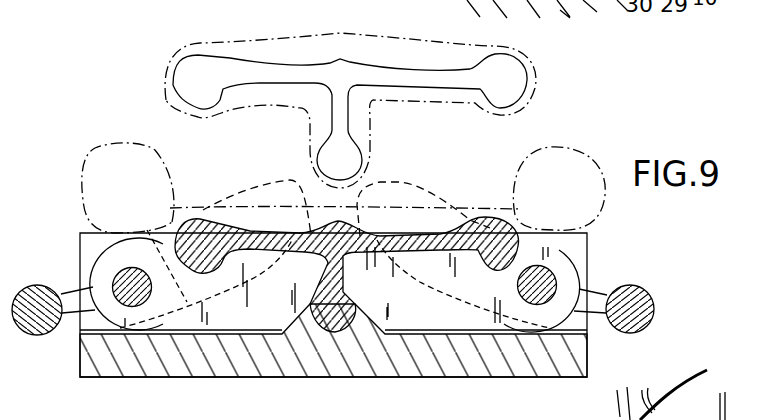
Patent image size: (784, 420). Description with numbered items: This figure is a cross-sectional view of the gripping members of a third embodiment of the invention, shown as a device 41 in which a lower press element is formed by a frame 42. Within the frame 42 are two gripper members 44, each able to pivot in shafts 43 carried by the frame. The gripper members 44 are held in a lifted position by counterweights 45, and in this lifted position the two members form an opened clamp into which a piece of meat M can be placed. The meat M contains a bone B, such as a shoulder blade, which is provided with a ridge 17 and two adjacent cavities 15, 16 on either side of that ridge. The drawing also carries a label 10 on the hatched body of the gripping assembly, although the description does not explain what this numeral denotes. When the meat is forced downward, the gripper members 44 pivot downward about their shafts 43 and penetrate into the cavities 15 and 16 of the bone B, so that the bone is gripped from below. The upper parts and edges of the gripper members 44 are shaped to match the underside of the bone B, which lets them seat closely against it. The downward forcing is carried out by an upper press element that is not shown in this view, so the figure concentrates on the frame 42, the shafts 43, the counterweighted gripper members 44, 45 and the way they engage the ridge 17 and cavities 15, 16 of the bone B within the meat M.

The piece of meat M is at (298, 39).
The bone B is at (510, 80).
The clamping body 10 is at (433, 232).
The cavity 15 is at (319, 116).
The cavity 16 is at (364, 108).
The ridge 17 is at (343, 149).
The device 41 is at (65, 268).
The frame 42 is at (572, 353).
The shafts 43 is at (140, 290).
The gripper members 44 is at (289, 186).
The counterweights 45 is at (46, 334).